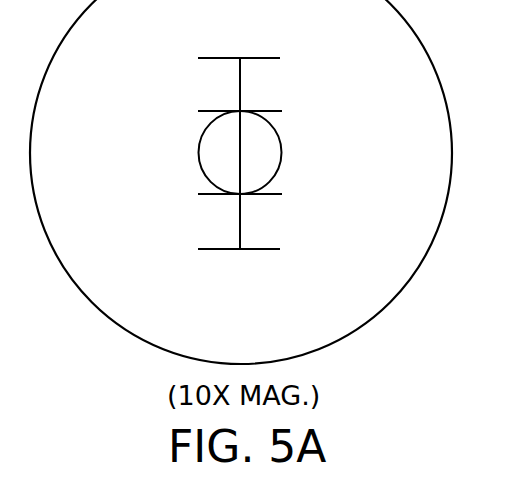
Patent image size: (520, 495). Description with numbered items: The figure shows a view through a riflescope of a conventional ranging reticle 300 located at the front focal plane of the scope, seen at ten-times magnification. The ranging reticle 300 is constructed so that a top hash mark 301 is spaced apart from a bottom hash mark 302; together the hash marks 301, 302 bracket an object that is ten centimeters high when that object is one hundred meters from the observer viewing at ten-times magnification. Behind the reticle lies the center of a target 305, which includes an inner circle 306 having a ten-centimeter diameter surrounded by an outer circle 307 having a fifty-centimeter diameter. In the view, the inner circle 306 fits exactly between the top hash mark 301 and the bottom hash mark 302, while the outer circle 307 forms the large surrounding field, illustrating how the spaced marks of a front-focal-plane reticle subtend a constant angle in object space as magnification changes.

The ranging reticle 300 is at (199, 178).
The top hash mark 301 is at (274, 111).
The bottom hash mark 302 is at (274, 194).
The target 305 is at (241, 211).
The inner circle 306 is at (210, 183).
The outer circle 307 is at (258, 362).